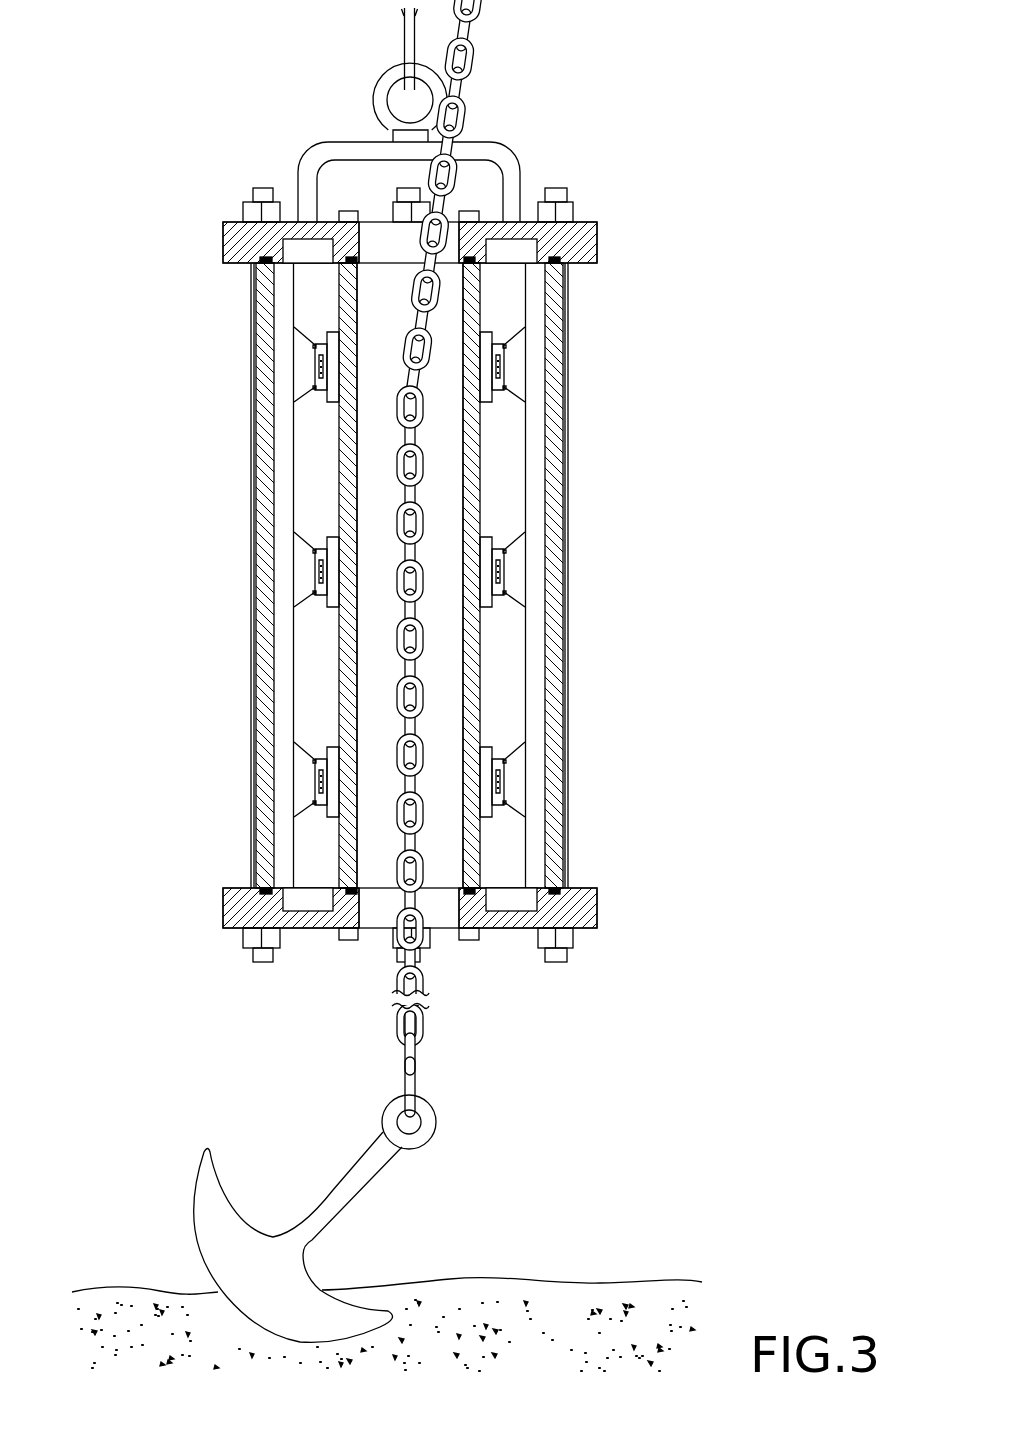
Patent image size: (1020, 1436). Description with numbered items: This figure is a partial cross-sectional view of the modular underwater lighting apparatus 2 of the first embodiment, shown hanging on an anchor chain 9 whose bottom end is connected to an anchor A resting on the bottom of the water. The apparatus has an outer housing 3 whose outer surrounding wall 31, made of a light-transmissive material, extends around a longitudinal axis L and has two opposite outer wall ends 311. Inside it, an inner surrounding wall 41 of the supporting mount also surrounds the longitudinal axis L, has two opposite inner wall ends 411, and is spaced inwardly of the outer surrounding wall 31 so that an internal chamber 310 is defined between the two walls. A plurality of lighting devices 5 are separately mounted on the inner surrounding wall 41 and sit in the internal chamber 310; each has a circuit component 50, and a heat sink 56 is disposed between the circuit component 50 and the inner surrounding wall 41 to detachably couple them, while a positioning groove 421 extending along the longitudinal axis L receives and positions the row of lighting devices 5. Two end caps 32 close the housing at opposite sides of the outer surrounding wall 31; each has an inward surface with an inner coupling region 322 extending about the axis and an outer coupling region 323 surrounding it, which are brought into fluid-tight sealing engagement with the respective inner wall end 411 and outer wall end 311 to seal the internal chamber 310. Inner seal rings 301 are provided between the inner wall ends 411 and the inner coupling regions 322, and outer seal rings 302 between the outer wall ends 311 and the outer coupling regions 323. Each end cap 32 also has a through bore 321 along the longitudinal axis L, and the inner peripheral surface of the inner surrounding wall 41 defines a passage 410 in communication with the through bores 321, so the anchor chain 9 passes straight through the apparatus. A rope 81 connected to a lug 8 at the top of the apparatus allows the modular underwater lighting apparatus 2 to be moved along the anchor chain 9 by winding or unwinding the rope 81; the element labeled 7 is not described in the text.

The modular underwater lighting apparatus 2 is at (182, 150).
The longitudinal axis L is at (350, 46).
The rope 81 is at (405, 42).
The lug 8 is at (374, 106).
The end caps 32 is at (426, 565).
The through bore 321 is at (382, 240).
The inner coupling region 322 is at (335, 255).
The outer coupling region 323 is at (268, 258).
The outer seal rings 302 is at (568, 221).
The outer wall ends 311 is at (553, 258).
The inner wall ends 411 is at (478, 265).
The outer housing 3 is at (440, 580).
The protective sleeve 7 is at (250, 503).
The outer surrounding wall 31 is at (557, 504).
The inner surrounding wall 41 is at (347, 443).
The internal chamber 310 is at (537, 428).
The passage 410 is at (375, 637).
The inner seal rings 301 is at (467, 258).
The positioning groove 421 is at (282, 716).
The lighting devices 5 is at (411, 549).
The heat sink 56 is at (335, 333).
The circuit component 50 is at (317, 347).
The anchor chain 9 is at (395, 688).
The anchor A is at (337, 1188).